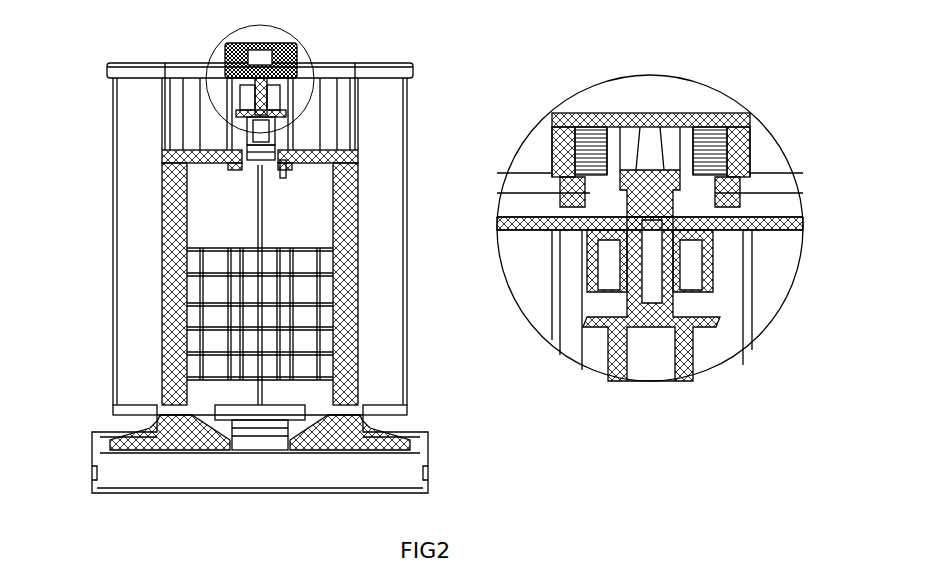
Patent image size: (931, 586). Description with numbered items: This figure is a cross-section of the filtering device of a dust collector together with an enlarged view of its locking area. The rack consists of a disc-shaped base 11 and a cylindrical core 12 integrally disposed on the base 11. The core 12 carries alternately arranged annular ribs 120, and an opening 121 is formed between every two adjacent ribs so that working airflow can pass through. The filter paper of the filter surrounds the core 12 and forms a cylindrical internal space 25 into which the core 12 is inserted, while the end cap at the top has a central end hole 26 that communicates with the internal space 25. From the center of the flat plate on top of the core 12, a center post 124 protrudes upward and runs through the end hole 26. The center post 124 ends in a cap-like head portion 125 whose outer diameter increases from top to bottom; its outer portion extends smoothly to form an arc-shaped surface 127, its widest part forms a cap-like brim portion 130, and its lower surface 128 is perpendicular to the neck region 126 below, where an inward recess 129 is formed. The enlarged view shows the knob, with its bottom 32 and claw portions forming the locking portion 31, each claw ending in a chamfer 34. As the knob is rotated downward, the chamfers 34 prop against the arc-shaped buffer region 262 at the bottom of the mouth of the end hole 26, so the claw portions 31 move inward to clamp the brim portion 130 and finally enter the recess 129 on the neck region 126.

The base 11 is at (115, 467).
The core 12 is at (345, 235).
The internal space 25 is at (296, 195).
The end hole 26 is at (710, 230).
The locking portion 31 is at (750, 173).
The bottom 32 is at (655, 113).
The chamfer 34 is at (500, 220).
The annular ribs 120 is at (322, 277).
The opening 121 is at (318, 322).
The center post 124 is at (278, 133).
The head portion 125 is at (750, 143).
The neck region 126 is at (712, 317).
The arc-shaped surface 127 is at (745, 198).
The lower surface 128 is at (717, 243).
The inward recess 129 is at (673, 242).
The cap-like brim portion 130 is at (550, 188).
The arc-shaped buffer region 262 is at (712, 225).